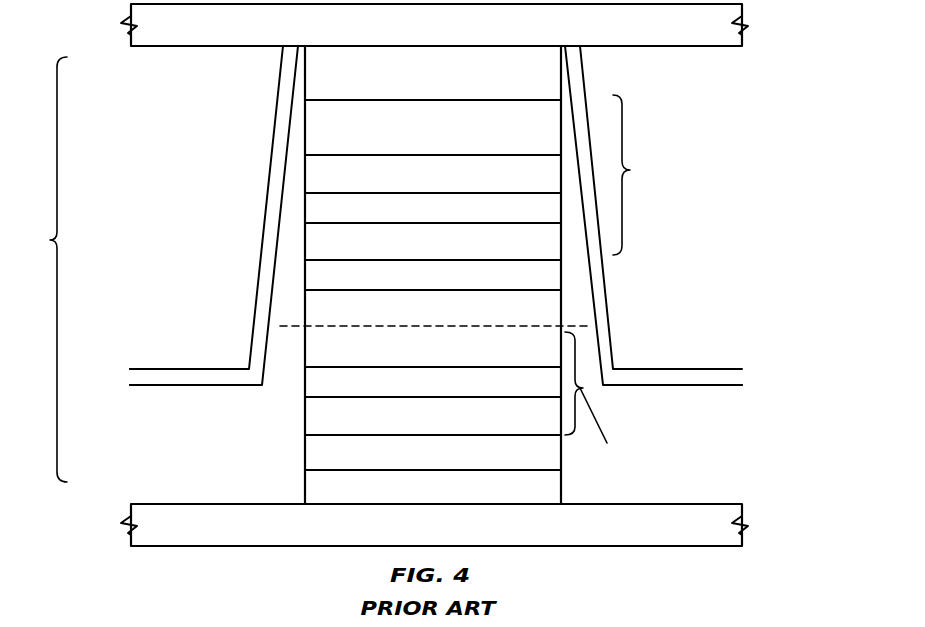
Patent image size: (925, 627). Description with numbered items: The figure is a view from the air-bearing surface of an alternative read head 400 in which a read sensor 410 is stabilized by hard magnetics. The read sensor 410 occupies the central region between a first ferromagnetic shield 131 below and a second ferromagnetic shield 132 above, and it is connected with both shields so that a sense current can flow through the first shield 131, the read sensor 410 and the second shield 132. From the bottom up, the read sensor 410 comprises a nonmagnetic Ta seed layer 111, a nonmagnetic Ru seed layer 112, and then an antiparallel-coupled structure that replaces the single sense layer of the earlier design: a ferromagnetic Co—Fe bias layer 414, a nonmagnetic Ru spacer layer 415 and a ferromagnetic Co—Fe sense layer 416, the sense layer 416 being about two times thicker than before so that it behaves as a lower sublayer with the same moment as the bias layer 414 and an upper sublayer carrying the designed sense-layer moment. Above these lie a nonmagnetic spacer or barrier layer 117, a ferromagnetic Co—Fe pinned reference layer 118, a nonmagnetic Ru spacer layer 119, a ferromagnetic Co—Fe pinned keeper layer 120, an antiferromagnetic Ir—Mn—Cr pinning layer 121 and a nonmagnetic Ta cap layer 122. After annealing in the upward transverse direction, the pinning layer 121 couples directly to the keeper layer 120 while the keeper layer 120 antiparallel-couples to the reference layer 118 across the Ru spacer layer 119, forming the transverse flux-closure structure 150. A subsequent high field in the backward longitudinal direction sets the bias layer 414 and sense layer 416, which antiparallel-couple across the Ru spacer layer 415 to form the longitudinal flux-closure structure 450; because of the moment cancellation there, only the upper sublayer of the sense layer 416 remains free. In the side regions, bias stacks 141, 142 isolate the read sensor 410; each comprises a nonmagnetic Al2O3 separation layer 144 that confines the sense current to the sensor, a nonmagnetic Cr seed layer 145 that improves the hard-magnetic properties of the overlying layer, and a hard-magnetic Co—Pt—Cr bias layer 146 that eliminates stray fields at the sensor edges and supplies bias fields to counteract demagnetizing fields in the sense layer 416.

The read head 400 is at (186, 556).
The read sensor 410 is at (39, 269).
The longitudinal flux-closure structure 450 is at (711, 474).
The transverse flux-closure structure 150 is at (667, 209).
The first ferromagnetic shield 131 is at (533, 536).
The second ferromagnetic shield 132 is at (531, 36).
The Ta seed layer 111 is at (498, 497).
The Ru seed layer 112 is at (498, 467).
The Co—Fe bias layer 414 is at (498, 431).
The Ru spacer layer 415 is at (498, 394).
The Co—Fe sense layer 416 is at (498, 318).
The spacer or barrier layer 117 is at (498, 284).
The Co—Fe pinned reference layer 118 is at (498, 252).
The Ru spacer layer 119 is at (498, 219).
The Co—Fe pinned keeper layer 120 is at (498, 186).
The Ir—Mn—Cr pinning layer 121 is at (498, 139).
The Ta cap layer 122 is at (498, 91).
The bias stack 141 is at (155, 215).
The bias stack 142 is at (781, 312).
The Al2O3 separation layer 144 is at (161, 434).
The Cr seed layer 145 is at (130, 372).
The Co—Pt—Cr bias layer 146 is at (166, 339).